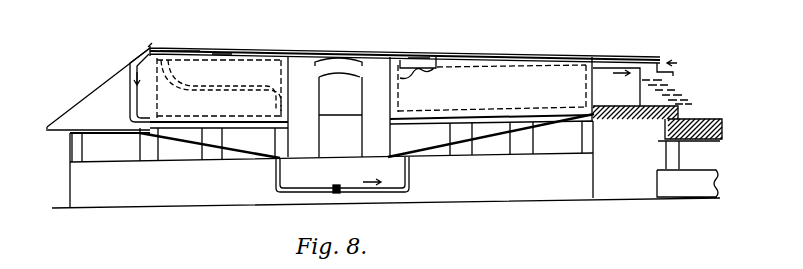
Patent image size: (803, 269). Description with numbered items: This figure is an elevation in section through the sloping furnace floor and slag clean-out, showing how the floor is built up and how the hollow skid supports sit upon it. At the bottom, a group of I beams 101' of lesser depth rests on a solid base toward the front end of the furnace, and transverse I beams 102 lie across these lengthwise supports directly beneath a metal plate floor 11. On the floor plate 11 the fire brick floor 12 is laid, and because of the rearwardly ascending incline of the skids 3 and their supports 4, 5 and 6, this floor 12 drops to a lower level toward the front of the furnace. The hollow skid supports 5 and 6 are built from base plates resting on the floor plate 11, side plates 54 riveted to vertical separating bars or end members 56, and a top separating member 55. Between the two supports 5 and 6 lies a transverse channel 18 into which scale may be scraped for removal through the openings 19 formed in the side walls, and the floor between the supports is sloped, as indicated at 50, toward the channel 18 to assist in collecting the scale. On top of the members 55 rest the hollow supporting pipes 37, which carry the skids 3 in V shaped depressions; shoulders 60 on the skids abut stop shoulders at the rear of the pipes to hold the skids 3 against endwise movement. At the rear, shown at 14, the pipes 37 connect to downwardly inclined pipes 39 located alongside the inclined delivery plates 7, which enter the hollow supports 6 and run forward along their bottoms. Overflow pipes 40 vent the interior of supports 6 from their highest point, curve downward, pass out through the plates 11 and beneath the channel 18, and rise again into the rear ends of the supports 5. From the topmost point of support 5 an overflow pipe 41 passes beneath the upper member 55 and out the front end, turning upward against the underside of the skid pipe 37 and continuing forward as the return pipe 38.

The skid 3 is at (298, 50).
The roof end 14 is at (150, 46).
The skid shoulder 60 is at (163, 51).
The top separating member 55 is at (221, 60).
The side plate 54 is at (248, 72).
The pipe 37 is at (612, 59).
The overflow pipe 41 is at (421, 71).
The return pipe 38 is at (634, 71).
The skid support 4 is at (668, 80).
The inclined delivery plate 7 is at (87, 94).
The downwardly inclined pipe 39 is at (131, 97).
The hollow skid support 6 is at (157, 90).
The vertical separating bar 56 is at (158, 100).
The overflow pipe 40 is at (212, 92).
The transverse channel 18 is at (290, 141).
The opening 19 is at (320, 95).
The skid support 5 is at (398, 94).
The fire brick floor 12 is at (437, 112).
The metal plate floor 11 is at (93, 129).
The transverse I beam 102 is at (83, 144).
The I beam 101' is at (386, 170).
The sloped floor 50 is at (252, 150).